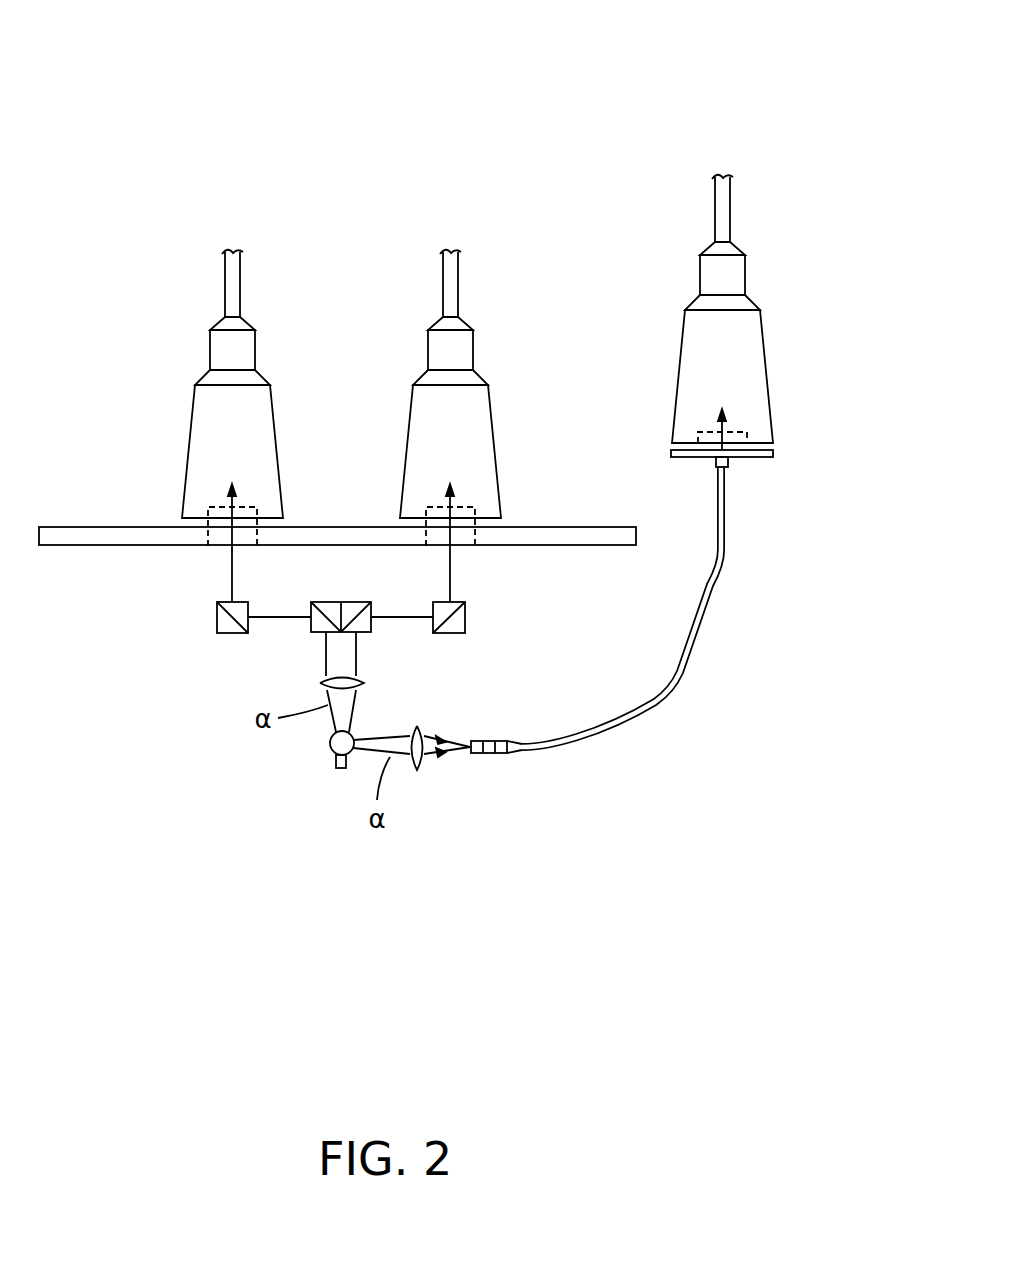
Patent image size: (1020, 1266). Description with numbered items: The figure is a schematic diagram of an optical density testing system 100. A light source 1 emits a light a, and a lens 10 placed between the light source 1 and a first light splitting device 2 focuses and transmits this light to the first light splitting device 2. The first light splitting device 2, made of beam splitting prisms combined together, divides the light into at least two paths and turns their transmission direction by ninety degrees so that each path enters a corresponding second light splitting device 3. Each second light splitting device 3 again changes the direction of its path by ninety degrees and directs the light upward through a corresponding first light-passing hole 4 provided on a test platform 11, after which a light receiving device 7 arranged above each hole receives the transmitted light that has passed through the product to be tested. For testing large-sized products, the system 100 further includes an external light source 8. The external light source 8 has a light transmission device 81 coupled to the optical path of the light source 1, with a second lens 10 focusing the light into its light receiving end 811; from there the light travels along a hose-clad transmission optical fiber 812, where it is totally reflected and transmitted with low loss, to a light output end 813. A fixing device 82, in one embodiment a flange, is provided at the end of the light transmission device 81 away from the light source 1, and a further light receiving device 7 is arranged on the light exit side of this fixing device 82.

The optical density testing system 100 is at (402, 47).
The light source 1 is at (340, 745).
The first light splitting device 2 is at (316, 625).
The second light splitting device 3 is at (227, 620).
The first light-passing hole 4 is at (459, 539).
The light receiving device 7 is at (430, 447).
The external light source 8 is at (678, 498).
The light transmission device 81 is at (644, 638).
The light receiving end 811 is at (510, 753).
The transmission optical fiber 812 is at (665, 695).
The light output end 813 is at (761, 553).
The fixing device 82 is at (759, 455).
The lens 10 is at (417, 727).
The test platform 11 is at (82, 537).